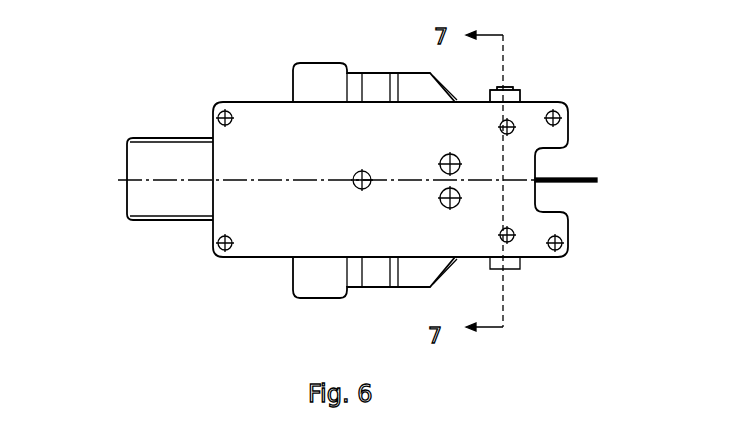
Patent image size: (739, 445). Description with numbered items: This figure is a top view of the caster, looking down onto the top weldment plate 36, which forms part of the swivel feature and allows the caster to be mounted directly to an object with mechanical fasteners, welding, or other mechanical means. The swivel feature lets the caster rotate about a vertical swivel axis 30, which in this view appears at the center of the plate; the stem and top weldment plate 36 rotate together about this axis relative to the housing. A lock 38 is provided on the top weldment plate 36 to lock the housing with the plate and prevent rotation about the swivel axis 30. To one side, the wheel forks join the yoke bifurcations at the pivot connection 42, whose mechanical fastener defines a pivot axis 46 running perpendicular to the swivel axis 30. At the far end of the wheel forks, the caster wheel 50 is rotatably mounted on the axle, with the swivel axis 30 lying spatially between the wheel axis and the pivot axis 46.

The swivel axis 30 is at (362, 172).
The top weldment plate 36 is at (336, 152).
The lock 38 is at (591, 178).
The pivot connection 42 is at (521, 92).
The pivot axis 46 is at (508, 88).
The caster wheel 50 is at (124, 180).